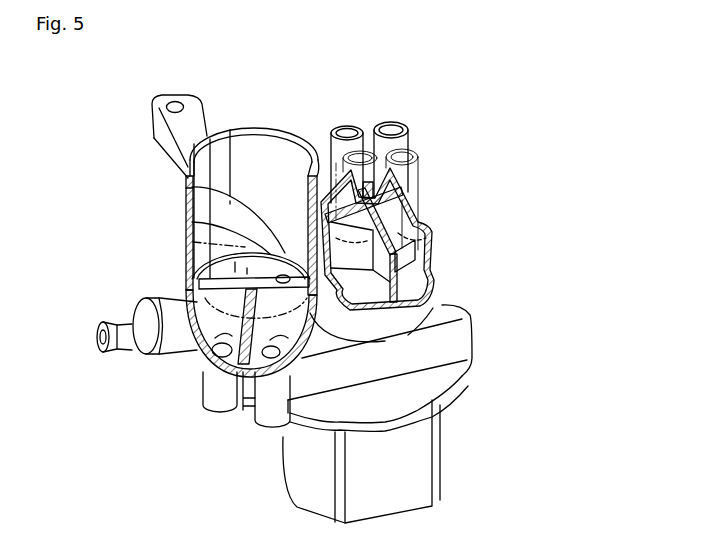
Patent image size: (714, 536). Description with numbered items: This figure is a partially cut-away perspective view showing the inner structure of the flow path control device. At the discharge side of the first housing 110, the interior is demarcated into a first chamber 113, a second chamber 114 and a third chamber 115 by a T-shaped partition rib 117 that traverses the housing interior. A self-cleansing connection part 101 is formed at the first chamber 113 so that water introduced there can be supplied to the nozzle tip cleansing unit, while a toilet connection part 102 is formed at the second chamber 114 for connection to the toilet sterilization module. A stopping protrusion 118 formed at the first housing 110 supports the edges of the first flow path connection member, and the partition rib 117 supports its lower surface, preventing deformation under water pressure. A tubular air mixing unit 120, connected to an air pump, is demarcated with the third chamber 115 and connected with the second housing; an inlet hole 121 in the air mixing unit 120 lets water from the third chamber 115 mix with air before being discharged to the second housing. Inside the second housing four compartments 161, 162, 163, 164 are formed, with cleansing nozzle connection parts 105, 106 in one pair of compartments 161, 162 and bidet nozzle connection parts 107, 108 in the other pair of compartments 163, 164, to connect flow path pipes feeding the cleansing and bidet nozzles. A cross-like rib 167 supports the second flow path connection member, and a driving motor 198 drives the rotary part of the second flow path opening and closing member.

The self-cleansing connection part 101 is at (205, 392).
The toilet connection part 102 is at (268, 418).
The cleansing nozzle connection part 105 is at (400, 148).
The cleansing nozzle connection part 106 is at (390, 128).
The bidet nozzle connection part 107 is at (342, 127).
The bidet nozzle connection part 108 is at (367, 177).
The first housing 110 is at (252, 127).
The first chamber 113 is at (223, 341).
The second chamber 114 is at (250, 366).
The third chamber 115 is at (203, 243).
The partition rib 117 is at (192, 287).
The stopping protrusion 118 is at (186, 187).
The air mixing unit 120 is at (150, 302).
The inlet hole 121 is at (186, 218).
The compartment 161 is at (428, 240).
The compartment 162 is at (405, 197).
The compartment 163 is at (400, 177).
The compartment 164 is at (418, 228).
The cross-like rib 167 is at (434, 260).
The driving motor 198 is at (422, 463).